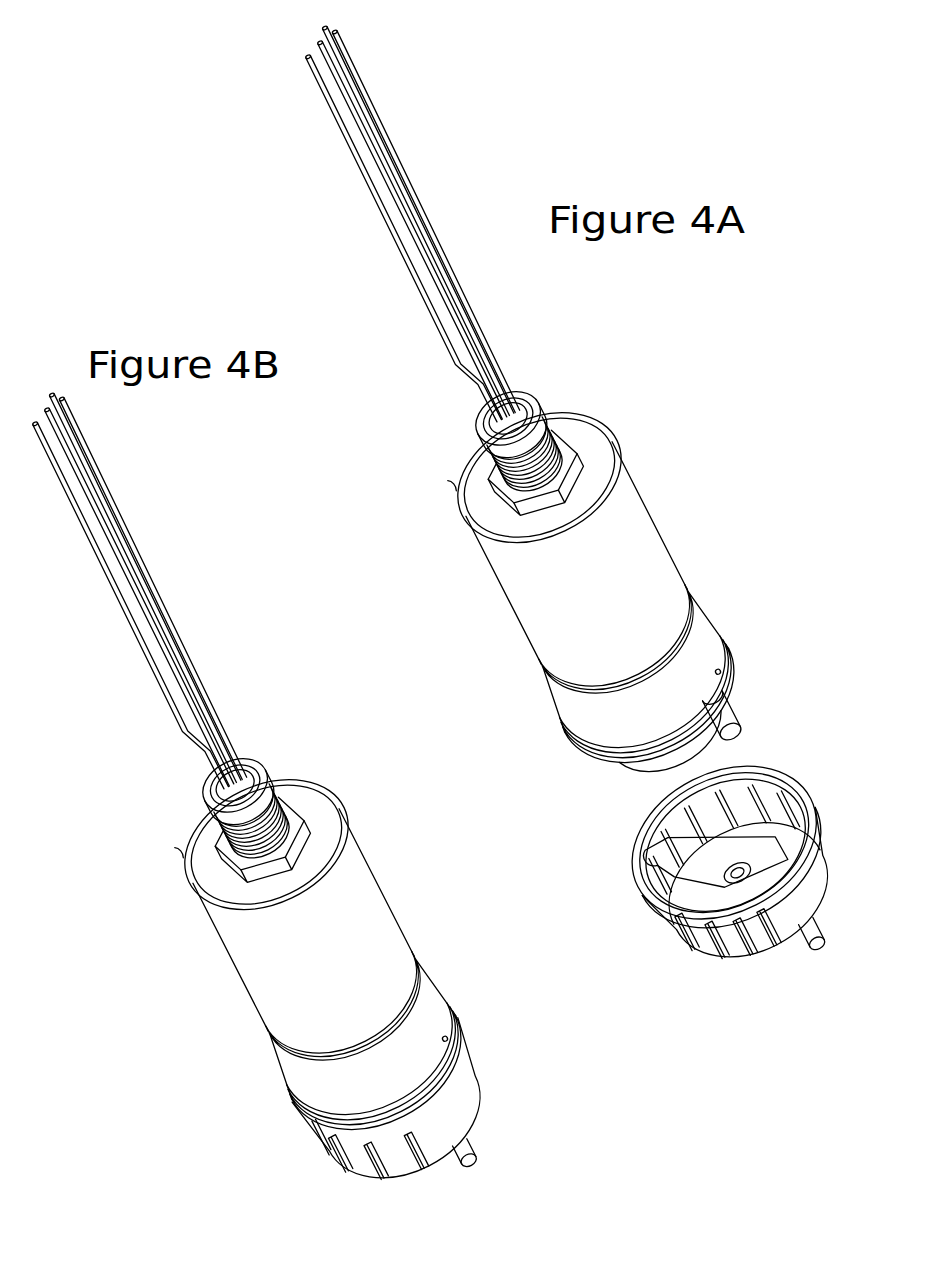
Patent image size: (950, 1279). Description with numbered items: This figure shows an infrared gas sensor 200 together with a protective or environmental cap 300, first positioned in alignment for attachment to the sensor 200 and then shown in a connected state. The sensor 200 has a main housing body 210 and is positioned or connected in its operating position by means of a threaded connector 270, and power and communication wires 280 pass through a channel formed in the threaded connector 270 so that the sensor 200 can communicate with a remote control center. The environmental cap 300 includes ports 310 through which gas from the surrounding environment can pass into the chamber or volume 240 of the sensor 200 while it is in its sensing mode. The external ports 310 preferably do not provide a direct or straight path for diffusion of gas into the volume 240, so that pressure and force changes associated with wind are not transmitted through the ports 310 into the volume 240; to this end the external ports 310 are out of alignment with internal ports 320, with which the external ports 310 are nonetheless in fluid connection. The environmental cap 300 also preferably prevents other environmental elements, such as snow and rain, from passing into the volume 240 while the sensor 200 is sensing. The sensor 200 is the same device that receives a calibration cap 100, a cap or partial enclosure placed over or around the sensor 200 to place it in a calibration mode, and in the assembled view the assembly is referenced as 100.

In FIG. 4B, the calibration cap 100 is at (492, 1067).
In FIG. 4A, the sensor 200 is at (430, 496).
In FIG. 4B, the sensor 200 is at (186, 960).
In FIG. 4A, the housing body 210 is at (633, 468).
In FIG. 4A, the chamber 240 is at (655, 753).
In FIG. 4A, the threaded connector 270 is at (562, 408).
In FIG. 4B, the threaded connector 270 is at (292, 795).
In FIG. 4A, the power and communication wires 280 is at (443, 221).
In FIG. 4B, the power and communication wires 280 is at (210, 673).
In FIG. 4A, the environmental cap 300 is at (826, 905).
In FIG. 4A, the ports 310 is at (697, 940).
In FIG. 4B, the ports 310 is at (343, 1162).
In FIG. 4A, the internal ports 320 is at (745, 818).